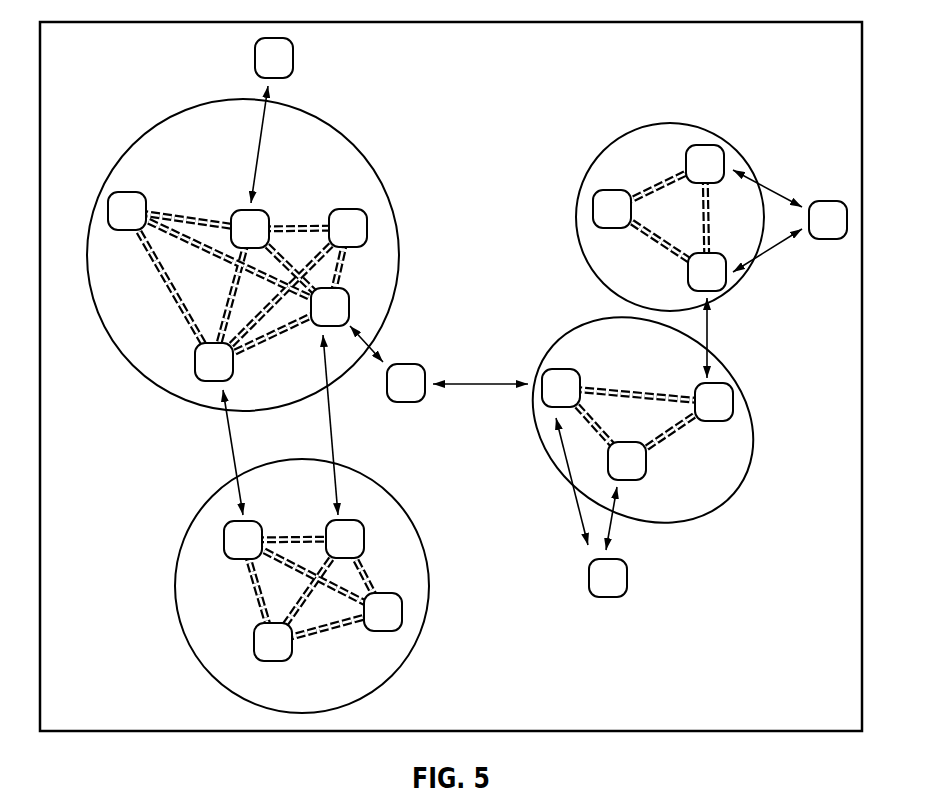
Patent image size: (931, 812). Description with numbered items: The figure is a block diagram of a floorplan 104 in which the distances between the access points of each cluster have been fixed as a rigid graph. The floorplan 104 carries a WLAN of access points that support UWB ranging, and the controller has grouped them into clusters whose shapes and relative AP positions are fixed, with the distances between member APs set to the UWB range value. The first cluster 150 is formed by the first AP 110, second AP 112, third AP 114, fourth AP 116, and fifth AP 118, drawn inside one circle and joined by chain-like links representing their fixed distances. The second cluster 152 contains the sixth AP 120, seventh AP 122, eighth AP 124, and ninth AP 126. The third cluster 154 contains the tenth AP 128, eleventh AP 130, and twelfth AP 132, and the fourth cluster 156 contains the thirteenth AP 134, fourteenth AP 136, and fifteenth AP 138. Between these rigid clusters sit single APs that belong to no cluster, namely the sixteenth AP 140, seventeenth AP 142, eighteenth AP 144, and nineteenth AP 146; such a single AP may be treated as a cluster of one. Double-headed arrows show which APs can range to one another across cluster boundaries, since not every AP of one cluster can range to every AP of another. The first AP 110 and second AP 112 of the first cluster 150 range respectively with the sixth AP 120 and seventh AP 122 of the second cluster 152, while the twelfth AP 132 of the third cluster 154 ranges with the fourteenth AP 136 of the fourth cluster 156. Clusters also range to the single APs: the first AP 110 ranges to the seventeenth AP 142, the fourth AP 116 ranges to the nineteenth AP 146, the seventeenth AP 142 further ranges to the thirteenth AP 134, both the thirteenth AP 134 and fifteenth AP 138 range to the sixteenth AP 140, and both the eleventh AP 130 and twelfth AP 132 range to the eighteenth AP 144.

The floorplan 104 is at (107, 21).
The first AP 110 is at (333, 307).
The second AP 112 is at (205, 370).
The third AP 114 is at (128, 202).
The fourth AP 116 is at (246, 218).
The fifth AP 118 is at (345, 220).
The sixth AP 120 is at (355, 543).
The seventh AP 122 is at (240, 552).
The eighth AP 124 is at (265, 640).
The ninth AP 126 is at (385, 618).
The tenth AP 128 is at (607, 210).
The eleventh AP 130 is at (703, 150).
The twelfth AP 132 is at (722, 280).
The thirteenth AP 134 is at (550, 378).
The fourteenth AP 136 is at (726, 405).
The fifteenth AP 138 is at (630, 470).
The sixteenth AP 140 is at (607, 590).
The seventeenth AP 142 is at (405, 395).
The eighteenth AP 144 is at (825, 208).
The nineteenth AP 146 is at (265, 62).
The first cluster 150 is at (160, 123).
The second cluster 152 is at (200, 510).
The third cluster 154 is at (610, 145).
The fourth cluster 156 is at (735, 495).